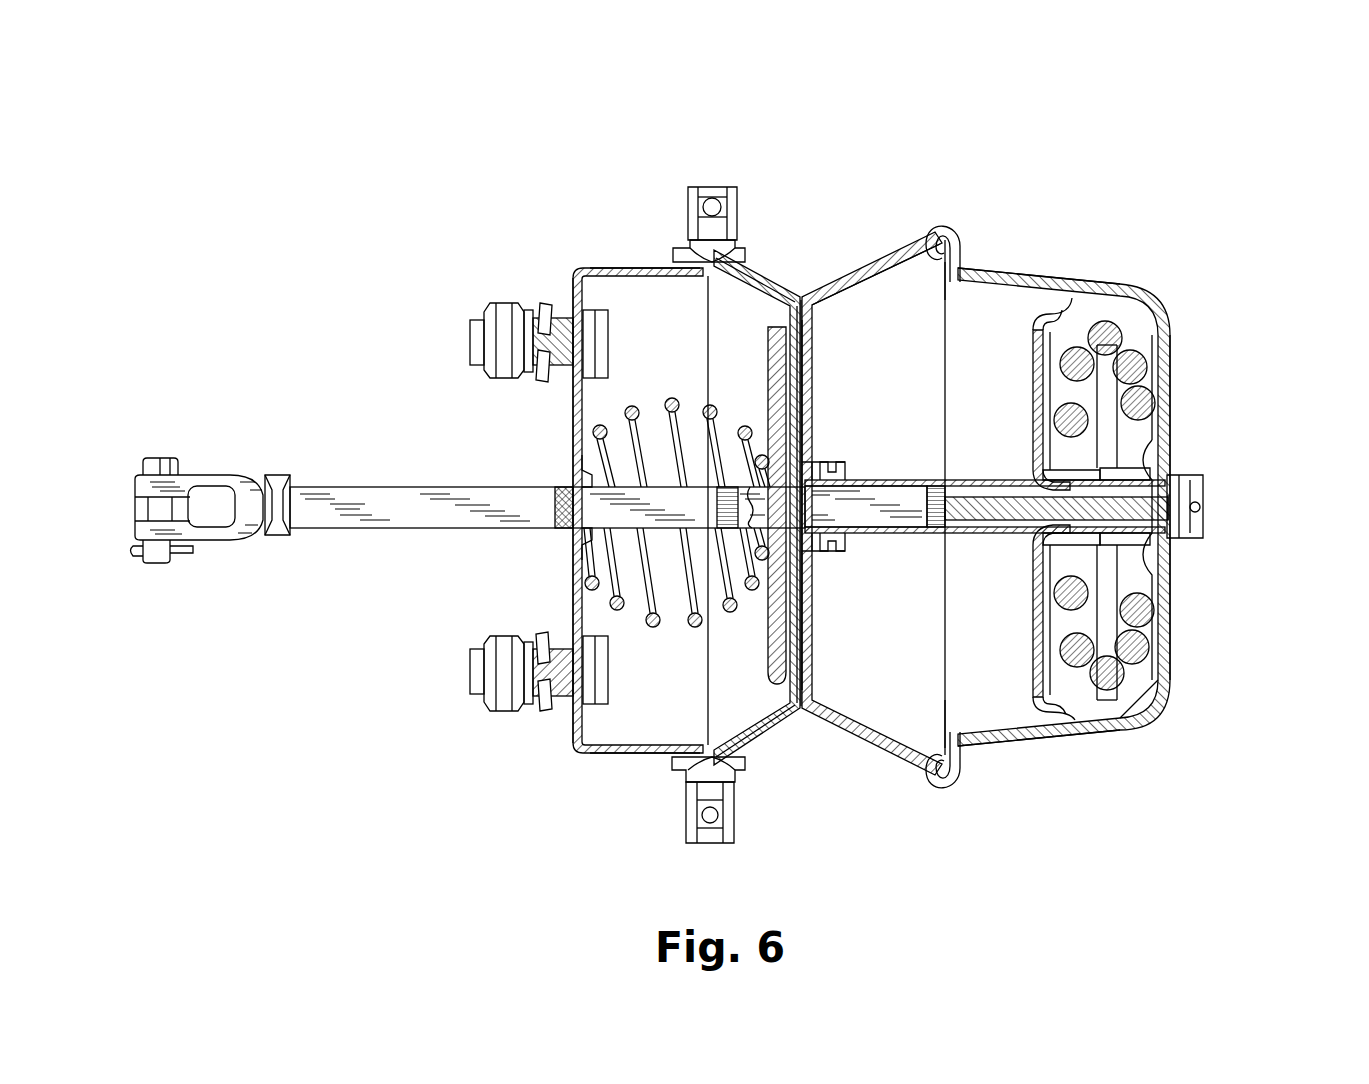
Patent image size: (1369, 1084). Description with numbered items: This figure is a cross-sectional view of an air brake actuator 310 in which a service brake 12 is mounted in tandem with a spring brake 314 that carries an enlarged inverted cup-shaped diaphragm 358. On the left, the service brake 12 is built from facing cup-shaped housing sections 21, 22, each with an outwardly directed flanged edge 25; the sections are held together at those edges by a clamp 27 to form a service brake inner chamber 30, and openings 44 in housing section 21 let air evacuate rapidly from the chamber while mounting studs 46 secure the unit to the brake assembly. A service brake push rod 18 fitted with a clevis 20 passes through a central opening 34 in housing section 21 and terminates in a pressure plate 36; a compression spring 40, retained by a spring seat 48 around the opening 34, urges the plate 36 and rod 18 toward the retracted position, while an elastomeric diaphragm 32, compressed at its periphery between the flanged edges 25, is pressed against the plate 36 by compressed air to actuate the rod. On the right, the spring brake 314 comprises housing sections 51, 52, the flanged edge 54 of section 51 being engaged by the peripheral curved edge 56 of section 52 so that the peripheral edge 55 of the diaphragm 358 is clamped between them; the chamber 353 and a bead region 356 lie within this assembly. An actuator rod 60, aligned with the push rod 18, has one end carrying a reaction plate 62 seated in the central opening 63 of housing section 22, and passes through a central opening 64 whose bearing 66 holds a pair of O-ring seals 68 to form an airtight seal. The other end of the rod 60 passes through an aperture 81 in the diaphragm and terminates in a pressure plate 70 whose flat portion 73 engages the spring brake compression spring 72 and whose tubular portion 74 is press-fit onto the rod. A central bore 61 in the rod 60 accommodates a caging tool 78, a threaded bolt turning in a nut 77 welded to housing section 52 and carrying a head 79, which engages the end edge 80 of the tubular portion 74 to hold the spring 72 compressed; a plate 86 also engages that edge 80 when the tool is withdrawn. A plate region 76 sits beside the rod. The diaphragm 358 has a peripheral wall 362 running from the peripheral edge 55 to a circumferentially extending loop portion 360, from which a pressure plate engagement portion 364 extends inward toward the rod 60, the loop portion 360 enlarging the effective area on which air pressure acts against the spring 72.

The air brake actuator 310 is at (880, 148).
The service brake portion 12 is at (596, 250).
The service brake push rod 18 is at (352, 512).
The clevis 20 is at (218, 485).
The housing section 21 is at (576, 272).
The housing section 22 is at (795, 298).
The flanged edge 25 is at (690, 246).
The clamp 27 is at (690, 833).
The service brake inner chamber 30 is at (700, 313).
The diaphragm 32 is at (772, 702).
The central opening 34 is at (578, 472).
The pressure plate 36 is at (766, 358).
The compression spring 40 is at (702, 425).
The openings 44 is at (640, 266).
The mounting studs 46 is at (470, 343).
The spring seat 48 is at (575, 542).
The housing section 51 is at (868, 274).
The housing section 52 is at (1150, 300).
The flanged edge 54 is at (944, 252).
The peripheral edge 55 is at (960, 250).
The peripheral curved edge 56 is at (962, 784).
The actuator rod 60 is at (845, 479).
The central bore 61 is at (864, 522).
The reaction plate 62 is at (817, 430).
The central opening 63 is at (808, 352).
The central opening 64 is at (812, 550).
The bearing 66 is at (822, 553).
The O-ring seals 68 is at (832, 468).
The pressure plate 70 is at (1070, 335).
The spring brake compression spring 72 is at (1142, 362).
The flat portion 73 is at (1044, 590).
The tubular portion 74 is at (1154, 452).
The diaphragm plate 76 is at (806, 352).
The nut 77 is at (1205, 535).
The brake release or caging tool 78 is at (1032, 520).
The nut or head 79 is at (1205, 513).
The end edge 80 is at (1166, 480).
The aperture 81 is at (1040, 488).
The plate 86 is at (936, 512).
The spring brake 314 is at (1045, 240).
The spring chamber 353 is at (968, 344).
The bead 356 is at (936, 234).
The diaphragm 358 is at (1020, 738).
The loop portion 360 is at (1108, 722).
The peripheral wall 362 is at (1012, 272).
The pressure plate engagement portion 364 is at (1035, 404).